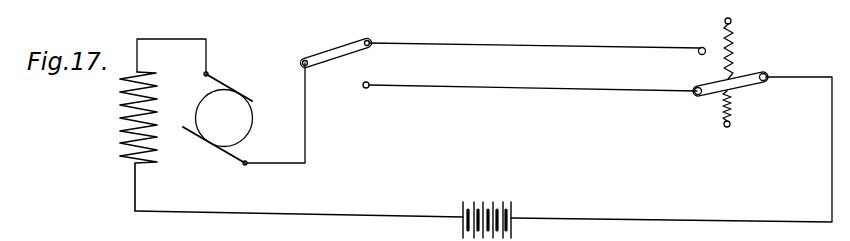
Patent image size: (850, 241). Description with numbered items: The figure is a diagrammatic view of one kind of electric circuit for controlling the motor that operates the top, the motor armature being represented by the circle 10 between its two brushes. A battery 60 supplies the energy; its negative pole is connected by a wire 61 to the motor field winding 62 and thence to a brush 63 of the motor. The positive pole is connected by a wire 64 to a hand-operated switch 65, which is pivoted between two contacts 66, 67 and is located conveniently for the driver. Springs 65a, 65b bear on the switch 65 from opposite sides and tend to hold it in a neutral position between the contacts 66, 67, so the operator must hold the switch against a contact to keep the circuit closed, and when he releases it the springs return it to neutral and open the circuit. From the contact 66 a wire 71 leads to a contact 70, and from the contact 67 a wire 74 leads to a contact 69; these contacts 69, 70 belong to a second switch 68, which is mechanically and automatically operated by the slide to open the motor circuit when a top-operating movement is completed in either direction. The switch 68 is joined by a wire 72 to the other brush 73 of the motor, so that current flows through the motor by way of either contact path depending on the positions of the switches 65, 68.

The roller 10 is at (232, 118).
The battery 60 is at (508, 203).
The wire 61 is at (353, 217).
The motor field winding 62 is at (122, 141).
The brush 63 is at (212, 79).
The wire 64 is at (666, 217).
The switch 65 is at (742, 73).
The spring 65a is at (735, 37).
The spring 65b is at (736, 109).
The contact 66 is at (700, 98).
The contact 67 is at (702, 47).
The switch 68 is at (343, 47).
The contact 69 is at (371, 40).
The contact 70 is at (368, 89).
The wire 71 is at (527, 89).
The wire 72 is at (306, 134).
The brush 73 is at (226, 156).
The wire 74 is at (564, 48).